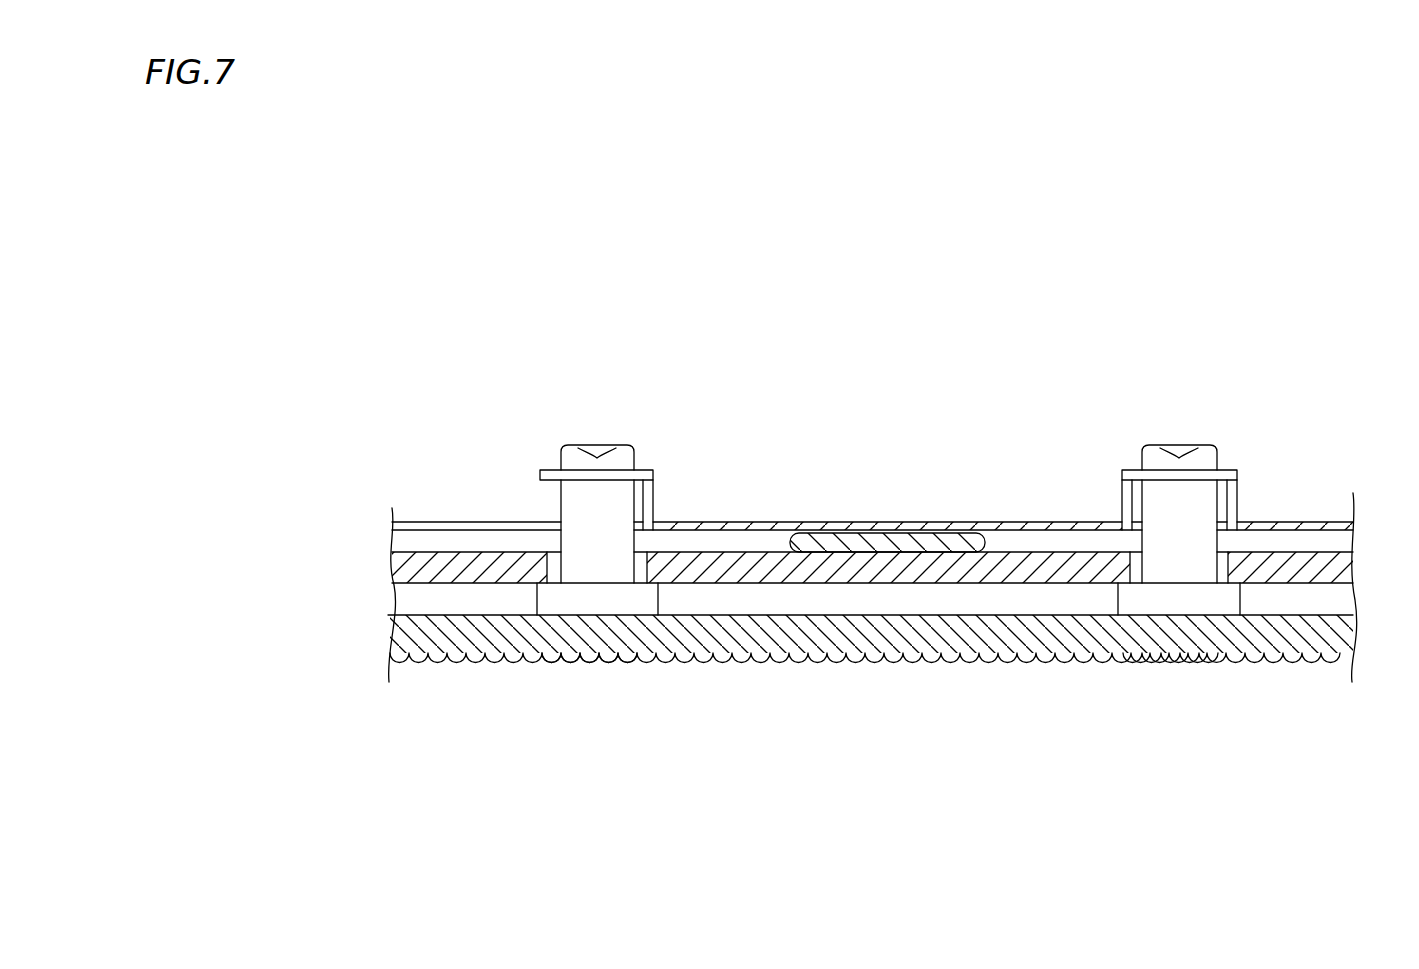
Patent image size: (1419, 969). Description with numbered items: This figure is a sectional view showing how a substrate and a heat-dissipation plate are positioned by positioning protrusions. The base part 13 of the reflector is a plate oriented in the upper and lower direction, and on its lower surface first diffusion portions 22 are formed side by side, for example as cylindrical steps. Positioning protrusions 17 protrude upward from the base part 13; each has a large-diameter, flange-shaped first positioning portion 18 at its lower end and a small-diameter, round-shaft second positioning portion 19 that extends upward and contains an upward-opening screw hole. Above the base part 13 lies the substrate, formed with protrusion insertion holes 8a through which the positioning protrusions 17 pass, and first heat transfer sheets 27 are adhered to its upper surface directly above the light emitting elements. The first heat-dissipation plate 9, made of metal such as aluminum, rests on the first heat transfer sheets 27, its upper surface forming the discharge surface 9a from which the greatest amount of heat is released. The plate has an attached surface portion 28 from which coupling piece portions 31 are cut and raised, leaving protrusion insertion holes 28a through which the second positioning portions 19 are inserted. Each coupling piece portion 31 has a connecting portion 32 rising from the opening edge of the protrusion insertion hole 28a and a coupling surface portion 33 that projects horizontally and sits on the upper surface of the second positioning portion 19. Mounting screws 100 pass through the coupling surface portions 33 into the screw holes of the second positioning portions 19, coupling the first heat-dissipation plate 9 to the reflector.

The mounting screw 100 is at (885, 376).
The second positioning portion 19 is at (885, 408).
The positioning protrusion 17 is at (827, 470).
The coupling surface portion 33 is at (925, 352).
The coupling piece portion 31 is at (900, 338).
The connecting portion 32 is at (940, 405).
The attached surface portion 28 is at (1020, 393).
The protrusion insertion hole 28a is at (1020, 389).
The first heat transfer sheet 27 is at (887, 494).
The first heat-dissipation plate 9 is at (872, 388).
The discharge surface 9a is at (667, 384).
The protrusion insertion hole 8a is at (906, 695).
The first positioning portion 18 is at (866, 674).
The first diffusion portion 22 is at (587, 662).
The base part 13 is at (870, 707).